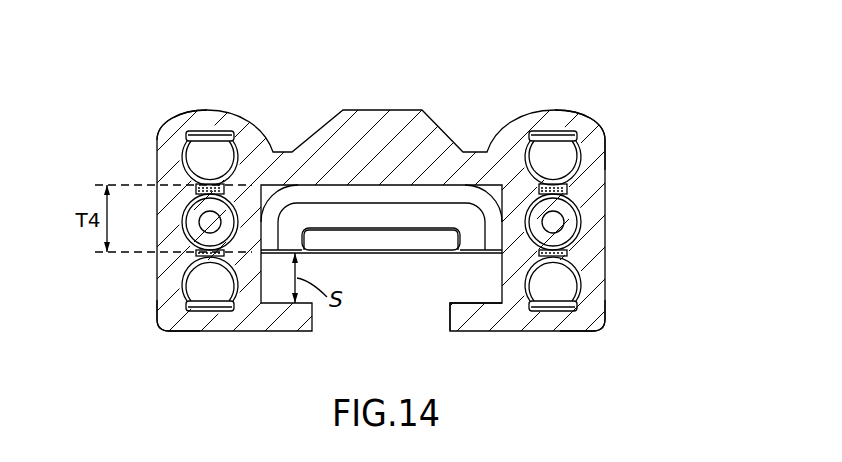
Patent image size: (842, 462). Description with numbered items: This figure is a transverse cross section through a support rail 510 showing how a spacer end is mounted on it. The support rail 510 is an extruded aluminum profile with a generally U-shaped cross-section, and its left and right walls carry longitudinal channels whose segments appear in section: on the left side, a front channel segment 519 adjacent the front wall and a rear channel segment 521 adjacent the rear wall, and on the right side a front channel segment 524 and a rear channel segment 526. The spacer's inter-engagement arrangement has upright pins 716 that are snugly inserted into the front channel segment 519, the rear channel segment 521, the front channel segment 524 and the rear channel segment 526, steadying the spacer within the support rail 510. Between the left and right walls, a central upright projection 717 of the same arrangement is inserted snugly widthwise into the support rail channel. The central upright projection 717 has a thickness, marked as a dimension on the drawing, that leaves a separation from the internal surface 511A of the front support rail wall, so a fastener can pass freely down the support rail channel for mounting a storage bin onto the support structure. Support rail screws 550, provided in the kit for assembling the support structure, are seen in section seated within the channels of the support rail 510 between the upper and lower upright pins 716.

The support rail 510 is at (446, 126).
The central upright projection 717 is at (375, 214).
The upright pins 716 is at (210, 157).
The support rail screws 550 is at (210, 222).
The rear channel segment 521 is at (180, 165).
The front channel segment 519 is at (176, 310).
The rear channel segment 526 is at (586, 148).
The front channel segment 524 is at (578, 297).
The internal surface 511A is at (477, 303).